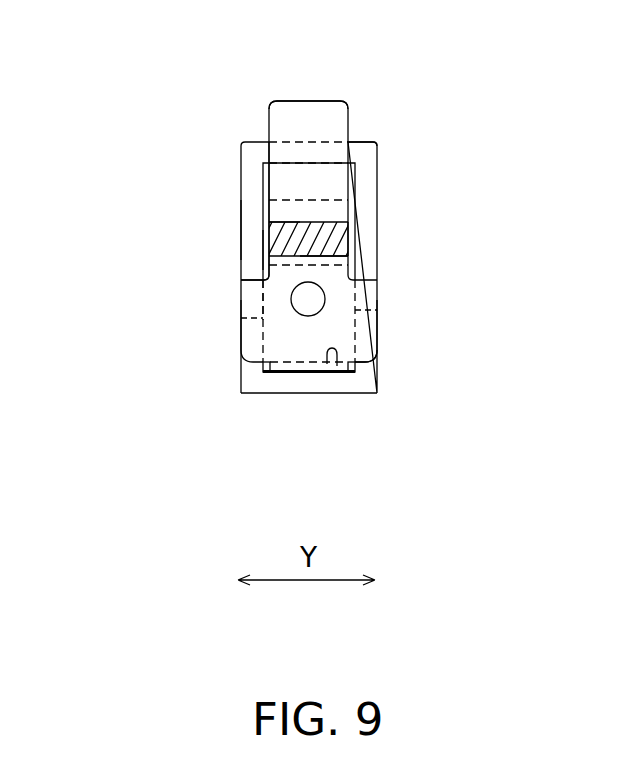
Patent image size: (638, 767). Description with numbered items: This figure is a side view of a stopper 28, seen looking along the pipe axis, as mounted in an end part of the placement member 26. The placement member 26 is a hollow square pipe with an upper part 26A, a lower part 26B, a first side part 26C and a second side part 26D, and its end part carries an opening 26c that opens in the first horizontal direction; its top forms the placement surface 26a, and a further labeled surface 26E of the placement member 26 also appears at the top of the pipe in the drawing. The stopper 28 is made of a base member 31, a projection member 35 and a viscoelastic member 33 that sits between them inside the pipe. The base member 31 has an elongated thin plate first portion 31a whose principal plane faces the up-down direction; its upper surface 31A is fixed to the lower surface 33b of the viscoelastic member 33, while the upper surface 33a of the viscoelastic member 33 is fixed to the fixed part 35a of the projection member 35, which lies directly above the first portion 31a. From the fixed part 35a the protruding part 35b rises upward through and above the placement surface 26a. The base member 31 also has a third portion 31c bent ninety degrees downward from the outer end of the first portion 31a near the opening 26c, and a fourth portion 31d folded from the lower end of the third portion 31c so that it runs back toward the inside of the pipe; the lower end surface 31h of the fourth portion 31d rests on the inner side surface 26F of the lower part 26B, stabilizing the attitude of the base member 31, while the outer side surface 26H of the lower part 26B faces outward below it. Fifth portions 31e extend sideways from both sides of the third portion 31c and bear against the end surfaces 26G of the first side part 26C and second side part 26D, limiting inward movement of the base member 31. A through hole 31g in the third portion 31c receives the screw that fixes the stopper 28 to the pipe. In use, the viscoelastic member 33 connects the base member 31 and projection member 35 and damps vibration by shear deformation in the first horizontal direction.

The placement member 26 is at (400, 223).
The upper part 26A is at (313, 133).
The lower part 26B is at (313, 375).
The first side part 26C is at (272, 232).
The second side part 26D is at (333, 230).
The top surface of housing 26E is at (292, 152).
The inner side surface 26F is at (340, 372).
The end surfaces 26G is at (253, 316).
The outer side surface 26H is at (297, 395).
The placement surface 26a is at (377, 142).
The opening 26c is at (360, 202).
The stopper 28 is at (243, 148).
The base member 31 is at (392, 356).
The upper surface 31A is at (333, 241).
The first portion 31a is at (263, 246).
The third portion 31c is at (272, 296).
The fourth portion 31d is at (285, 372).
The fifth portions 31e is at (241, 335).
The through hole 31g is at (301, 314).
The lower end surface 31h is at (337, 375).
The viscoelastic member 33 is at (352, 238).
The upper surface 33a is at (288, 222).
The lower surface 33b is at (327, 260).
The projection member 35 is at (366, 99).
The fixed part 35a is at (262, 183).
The protruding part 35b is at (302, 113).